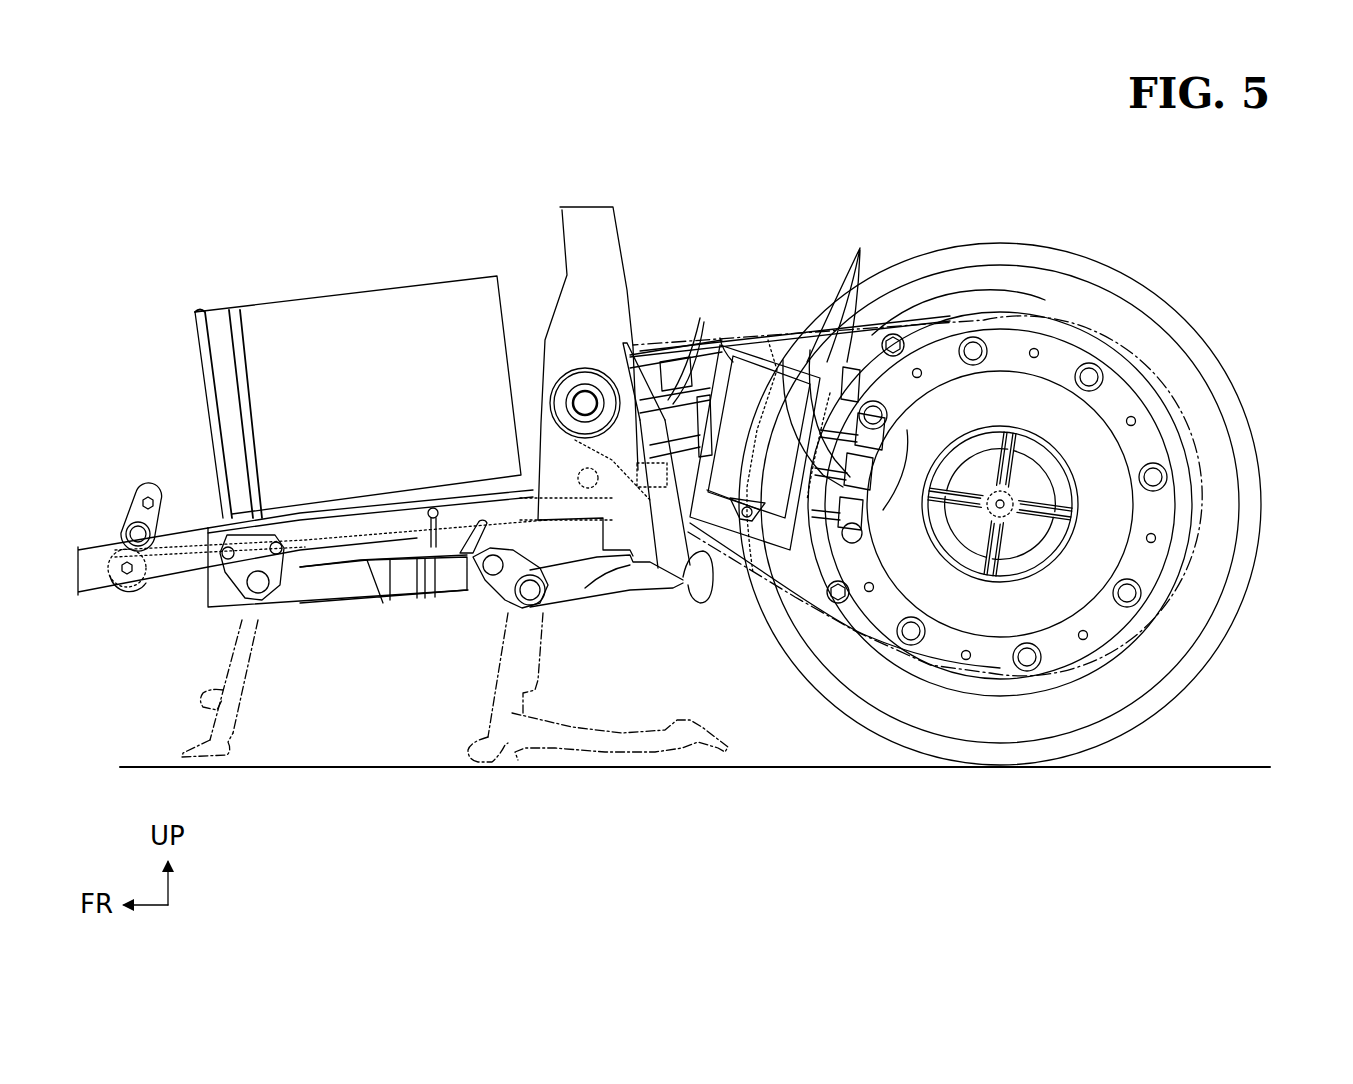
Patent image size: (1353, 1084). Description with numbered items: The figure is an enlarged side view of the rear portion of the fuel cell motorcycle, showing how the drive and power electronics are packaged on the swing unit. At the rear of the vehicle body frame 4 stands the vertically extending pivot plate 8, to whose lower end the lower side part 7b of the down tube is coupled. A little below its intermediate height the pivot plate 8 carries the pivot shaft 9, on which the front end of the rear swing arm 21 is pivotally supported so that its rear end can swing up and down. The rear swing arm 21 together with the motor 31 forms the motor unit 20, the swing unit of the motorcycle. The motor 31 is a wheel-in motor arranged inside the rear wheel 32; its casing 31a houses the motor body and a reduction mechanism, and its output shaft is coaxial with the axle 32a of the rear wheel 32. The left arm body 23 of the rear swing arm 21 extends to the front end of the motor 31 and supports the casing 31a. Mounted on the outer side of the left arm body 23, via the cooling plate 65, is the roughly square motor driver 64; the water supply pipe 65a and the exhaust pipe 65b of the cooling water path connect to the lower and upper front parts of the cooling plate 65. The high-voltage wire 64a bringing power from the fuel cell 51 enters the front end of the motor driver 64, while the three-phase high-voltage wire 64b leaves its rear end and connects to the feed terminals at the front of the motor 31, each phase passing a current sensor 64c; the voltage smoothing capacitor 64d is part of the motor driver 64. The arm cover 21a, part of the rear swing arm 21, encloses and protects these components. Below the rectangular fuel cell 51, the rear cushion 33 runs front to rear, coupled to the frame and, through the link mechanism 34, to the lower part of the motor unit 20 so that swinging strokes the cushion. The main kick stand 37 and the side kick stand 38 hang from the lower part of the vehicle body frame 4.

The vehicle body frame 4 is at (554, 276).
The lower side part 7b is at (167, 570).
The pivot plate 8 is at (608, 226).
The pivot shaft 9 is at (575, 403).
The motor unit 20 is at (1091, 288).
The rear swing arm 21 is at (736, 557).
The arm cover 21a is at (850, 638).
The left arm body 23 is at (778, 565).
The motor 31 is at (1106, 352).
The casing 31a is at (1120, 516).
The rear wheel 32 is at (1190, 328).
The axle 32a is at (1000, 504).
The rear cushion 33 is at (302, 602).
The link mechanism 34 is at (183, 520).
The main kick stand 37 is at (617, 590).
The side kick stand 38 is at (370, 572).
The fuel cell 51 is at (356, 286).
The motor driver 64 is at (742, 335).
The high-voltage wire 64a is at (665, 400).
The three-phase high-voltage wire 64b is at (860, 250).
The current sensor 64c is at (868, 460).
The voltage smoothing capacitor 64d is at (783, 360).
The cooling plate 65 is at (765, 336).
The water supply pipe 65a is at (627, 483).
The exhaust pipe 65b is at (645, 360).